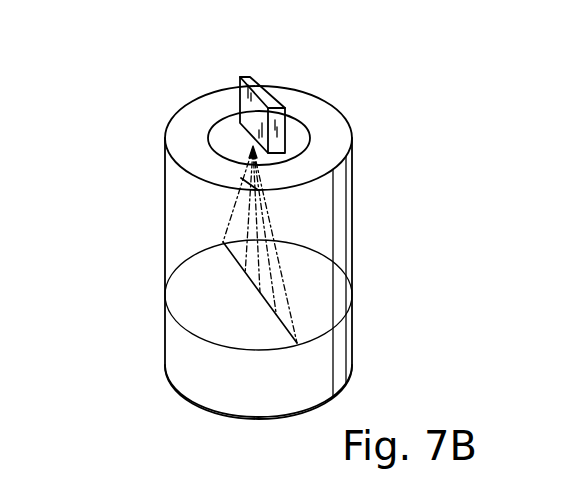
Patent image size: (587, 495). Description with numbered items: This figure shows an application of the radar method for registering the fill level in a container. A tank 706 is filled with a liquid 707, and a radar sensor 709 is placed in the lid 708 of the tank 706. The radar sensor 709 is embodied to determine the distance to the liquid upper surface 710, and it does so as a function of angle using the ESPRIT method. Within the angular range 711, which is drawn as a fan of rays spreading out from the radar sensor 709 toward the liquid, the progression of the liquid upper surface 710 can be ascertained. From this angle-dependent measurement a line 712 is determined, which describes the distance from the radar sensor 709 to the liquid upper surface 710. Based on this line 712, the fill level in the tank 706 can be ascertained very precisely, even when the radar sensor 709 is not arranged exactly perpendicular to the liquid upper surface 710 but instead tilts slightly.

The tank 706 is at (353, 217).
The liquid 707 is at (336, 361).
The lid 708 is at (295, 133).
The radar sensor 709 is at (262, 83).
The liquid upper surface 710 is at (187, 292).
The angular range 711 is at (242, 190).
The line 712 is at (247, 278).